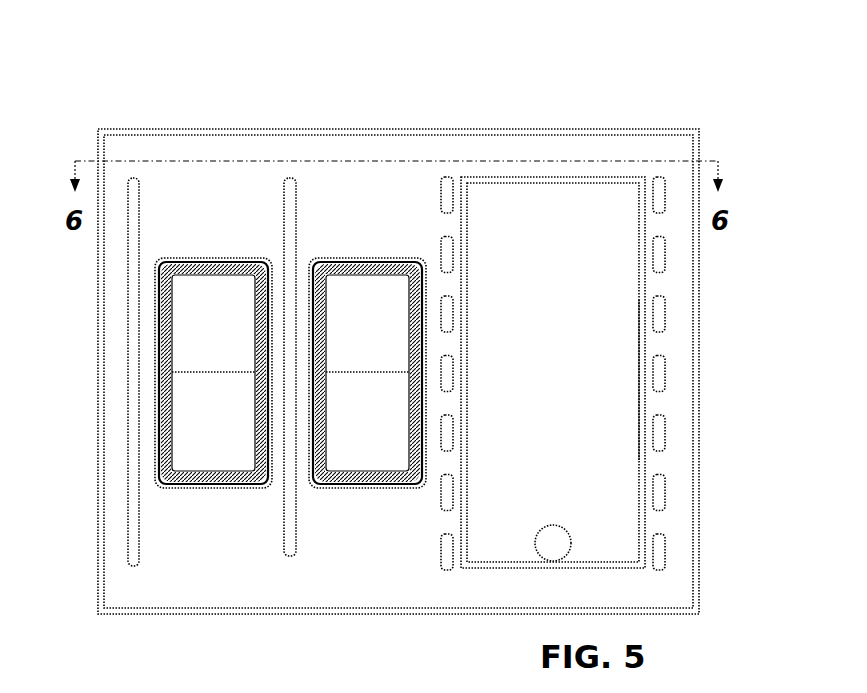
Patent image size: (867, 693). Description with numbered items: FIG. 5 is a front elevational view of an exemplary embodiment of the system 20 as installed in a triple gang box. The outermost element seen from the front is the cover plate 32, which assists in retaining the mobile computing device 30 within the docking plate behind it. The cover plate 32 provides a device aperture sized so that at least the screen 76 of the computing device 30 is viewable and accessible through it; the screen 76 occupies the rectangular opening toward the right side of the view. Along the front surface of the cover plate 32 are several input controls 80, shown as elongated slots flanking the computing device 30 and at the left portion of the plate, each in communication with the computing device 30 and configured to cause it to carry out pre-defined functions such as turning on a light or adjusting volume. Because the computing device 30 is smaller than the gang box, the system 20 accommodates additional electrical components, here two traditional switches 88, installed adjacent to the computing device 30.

The system 20 is at (669, 86).
The mobile computing device 30 is at (489, 194).
The cover plate 32 is at (90, 575).
The screen 76 is at (625, 365).
The input control 80 is at (434, 415).
The traditional switch 88 is at (234, 290).